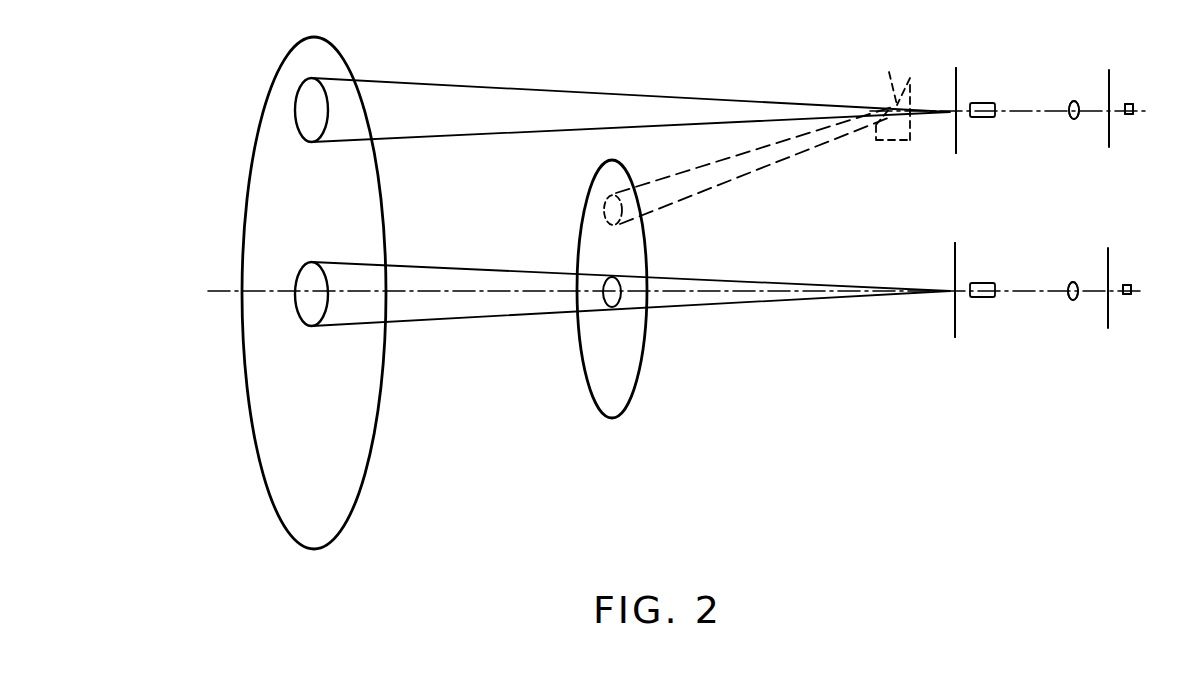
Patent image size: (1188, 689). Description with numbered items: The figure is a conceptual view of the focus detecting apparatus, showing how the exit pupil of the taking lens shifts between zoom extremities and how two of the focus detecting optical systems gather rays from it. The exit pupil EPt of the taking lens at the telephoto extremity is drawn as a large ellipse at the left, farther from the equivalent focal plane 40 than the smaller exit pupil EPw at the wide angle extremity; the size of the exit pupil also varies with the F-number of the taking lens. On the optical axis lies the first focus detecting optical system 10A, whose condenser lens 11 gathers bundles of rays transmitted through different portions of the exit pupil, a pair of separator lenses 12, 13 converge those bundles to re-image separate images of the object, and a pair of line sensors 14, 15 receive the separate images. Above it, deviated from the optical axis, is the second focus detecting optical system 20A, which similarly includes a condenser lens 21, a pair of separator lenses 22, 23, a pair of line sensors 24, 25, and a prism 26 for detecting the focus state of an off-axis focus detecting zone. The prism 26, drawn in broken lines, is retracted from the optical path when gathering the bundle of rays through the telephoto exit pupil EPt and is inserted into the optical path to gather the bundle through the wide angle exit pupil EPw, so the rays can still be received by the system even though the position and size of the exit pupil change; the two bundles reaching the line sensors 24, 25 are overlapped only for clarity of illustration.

The first focus detecting optical system 10A is at (1045, 360).
The condenser lens 11 is at (982, 298).
The separator lens 12 is at (1070, 301).
The separator lens 13 is at (1073, 291).
The line sensor 14 is at (1128, 295).
The line sensor 15 is at (1127, 289).
The second focus detecting optical system 20A is at (1035, 173).
The condenser lens 21 is at (982, 118).
The separator lens 22 is at (1074, 120).
The separator lens 23 is at (1074, 110).
The line sensor 24 is at (1130, 115).
The line sensor 25 is at (1129, 109).
The prism 26 is at (888, 92).
The equivalent focal plane 40 is at (956, 143).
The exit pupil at telephoto extremity EPt is at (338, 518).
The exit pupil at wide angle extremity EPw is at (627, 395).